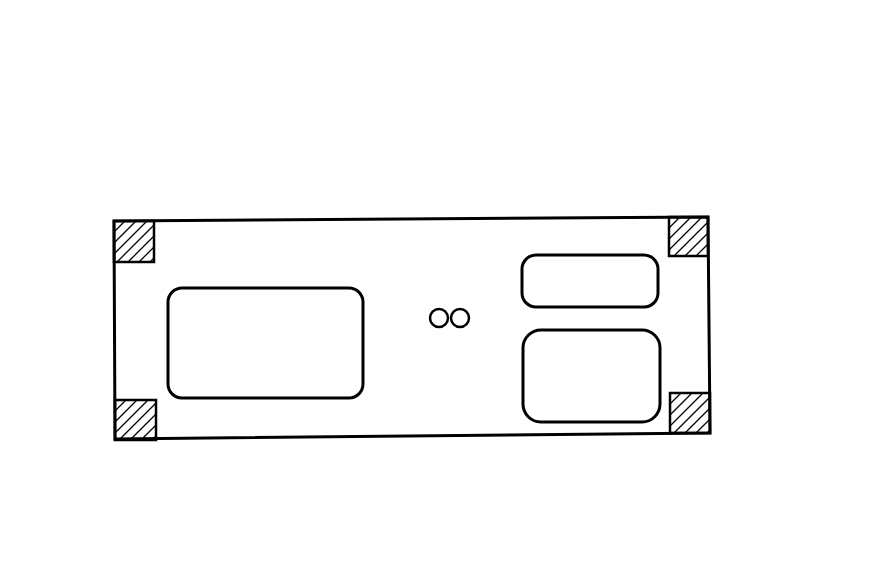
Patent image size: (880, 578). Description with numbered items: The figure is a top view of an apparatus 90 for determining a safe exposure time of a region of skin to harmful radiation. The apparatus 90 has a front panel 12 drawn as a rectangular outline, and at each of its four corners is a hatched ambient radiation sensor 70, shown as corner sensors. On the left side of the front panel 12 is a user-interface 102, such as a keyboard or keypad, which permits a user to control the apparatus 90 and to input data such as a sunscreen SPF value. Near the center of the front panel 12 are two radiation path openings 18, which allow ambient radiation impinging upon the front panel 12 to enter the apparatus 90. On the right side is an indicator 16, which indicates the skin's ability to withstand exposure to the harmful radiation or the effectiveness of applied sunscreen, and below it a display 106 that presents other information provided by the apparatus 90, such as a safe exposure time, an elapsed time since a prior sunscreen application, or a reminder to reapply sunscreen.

The apparatus 90 is at (82, 90).
The front panel 12 is at (125, 320).
The ambient radiation sensors 70 is at (127, 222).
The user-interface 102 is at (363, 378).
The radiation path openings 18 is at (433, 308).
The indicator 16 is at (658, 285).
The display 106 is at (522, 375).